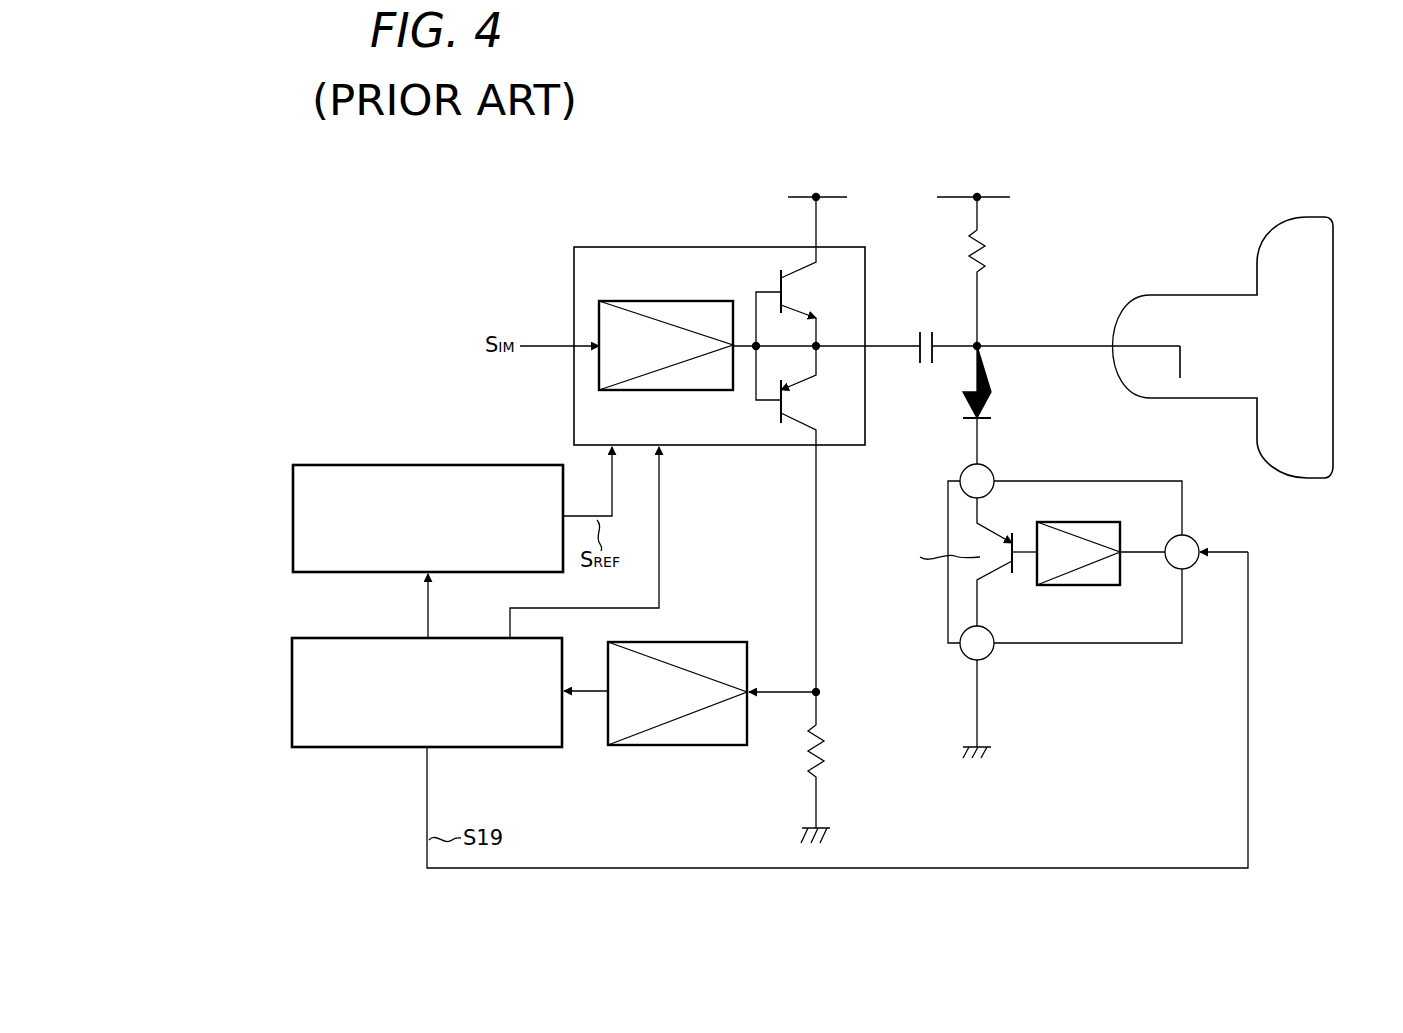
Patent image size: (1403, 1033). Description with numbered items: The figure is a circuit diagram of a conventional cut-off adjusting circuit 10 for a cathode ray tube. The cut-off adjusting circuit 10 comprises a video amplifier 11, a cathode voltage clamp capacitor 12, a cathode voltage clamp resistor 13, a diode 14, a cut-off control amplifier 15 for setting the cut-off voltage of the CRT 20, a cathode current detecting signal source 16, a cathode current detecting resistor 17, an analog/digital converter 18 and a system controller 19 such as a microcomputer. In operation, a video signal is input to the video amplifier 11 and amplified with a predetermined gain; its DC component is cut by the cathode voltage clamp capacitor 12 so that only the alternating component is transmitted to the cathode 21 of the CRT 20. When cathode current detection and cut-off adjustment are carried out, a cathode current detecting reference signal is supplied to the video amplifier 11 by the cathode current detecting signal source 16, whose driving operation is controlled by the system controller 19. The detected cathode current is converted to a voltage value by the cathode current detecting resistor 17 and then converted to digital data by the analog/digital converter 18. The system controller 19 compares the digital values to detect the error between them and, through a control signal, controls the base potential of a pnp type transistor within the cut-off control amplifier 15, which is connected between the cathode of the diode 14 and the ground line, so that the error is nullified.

The cut-off adjusting circuit 10 is at (750, 172).
The video amplifier 11 is at (574, 267).
The cathode voltage clamp capacitor 12 is at (920, 332).
The cathode voltage clamp resistor 13 is at (985, 241).
The diode 14 is at (986, 393).
The cut-off control amplifier 15 is at (1185, 498).
The cathode current detecting signal source 16 is at (397, 464).
The cathode current detecting resistor 17 is at (820, 752).
The analog/digital converter 18 is at (687, 748).
The system controller 19 is at (377, 749).
The CRT 20 is at (1325, 219).
The cathode 21 is at (1170, 345).